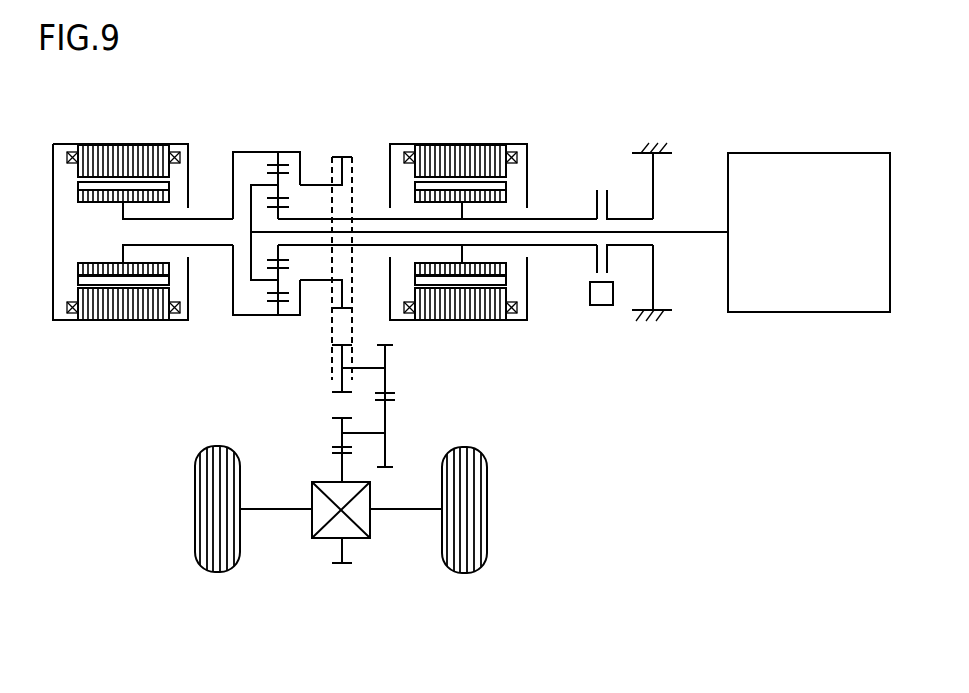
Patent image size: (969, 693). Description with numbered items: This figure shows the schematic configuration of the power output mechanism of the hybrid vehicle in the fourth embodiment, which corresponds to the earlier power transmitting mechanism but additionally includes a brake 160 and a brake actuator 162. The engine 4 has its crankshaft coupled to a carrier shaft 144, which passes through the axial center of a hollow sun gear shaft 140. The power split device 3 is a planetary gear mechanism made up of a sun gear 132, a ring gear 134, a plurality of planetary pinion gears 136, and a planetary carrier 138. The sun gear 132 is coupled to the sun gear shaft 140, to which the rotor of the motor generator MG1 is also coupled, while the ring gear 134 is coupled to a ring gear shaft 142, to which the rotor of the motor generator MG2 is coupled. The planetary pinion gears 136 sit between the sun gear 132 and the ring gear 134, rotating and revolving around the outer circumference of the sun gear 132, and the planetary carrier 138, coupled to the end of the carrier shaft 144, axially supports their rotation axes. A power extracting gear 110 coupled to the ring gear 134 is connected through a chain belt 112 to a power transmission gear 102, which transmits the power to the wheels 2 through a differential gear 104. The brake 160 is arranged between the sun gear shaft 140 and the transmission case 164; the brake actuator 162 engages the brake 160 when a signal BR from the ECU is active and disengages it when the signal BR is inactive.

The wheels 2 is at (195, 509).
The power split device 3 is at (249, 325).
The engine 4 is at (812, 152).
The power transmission gear 102 is at (416, 407).
The differential gear 104 is at (327, 540).
The power extracting gear 110 is at (338, 157).
The chain belt 112 is at (353, 333).
The sun gear 132 is at (281, 253).
The ring gear 134 is at (279, 162).
The planetary pinion gears 136 is at (284, 191).
The planetary carrier 138 is at (251, 203).
The sun gear shaft 140 is at (318, 247).
The ring gear shaft 142 is at (212, 248).
The carrier shaft 144 is at (373, 229).
The brake 160 is at (602, 186).
The brake actuator 162 is at (590, 291).
The transmission case 164 is at (660, 139).
The motor generator MG1 is at (488, 327).
The motor generator MG2 is at (98, 325).
The signal BR is at (601, 318).